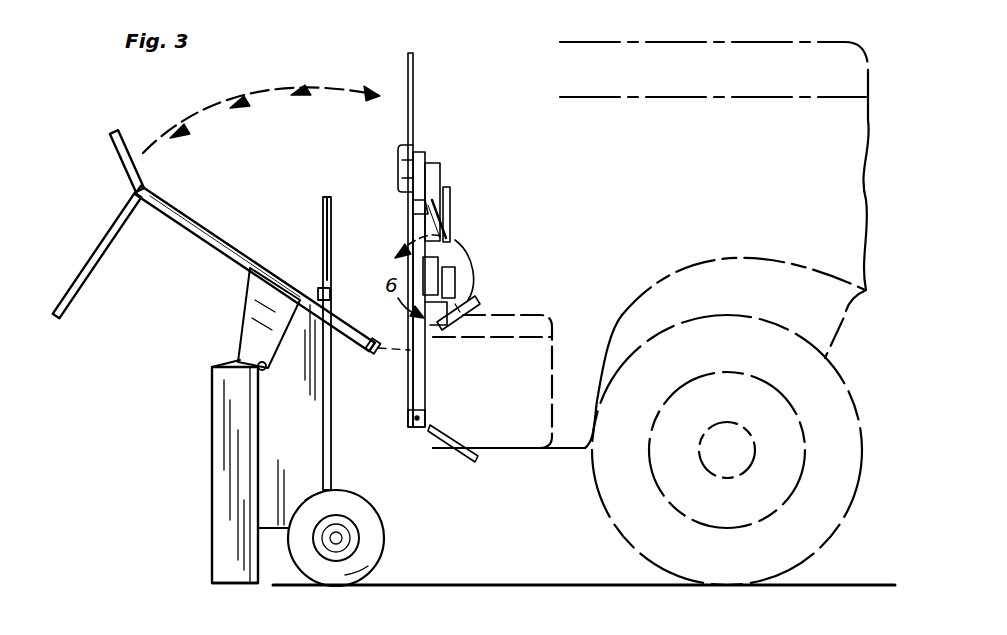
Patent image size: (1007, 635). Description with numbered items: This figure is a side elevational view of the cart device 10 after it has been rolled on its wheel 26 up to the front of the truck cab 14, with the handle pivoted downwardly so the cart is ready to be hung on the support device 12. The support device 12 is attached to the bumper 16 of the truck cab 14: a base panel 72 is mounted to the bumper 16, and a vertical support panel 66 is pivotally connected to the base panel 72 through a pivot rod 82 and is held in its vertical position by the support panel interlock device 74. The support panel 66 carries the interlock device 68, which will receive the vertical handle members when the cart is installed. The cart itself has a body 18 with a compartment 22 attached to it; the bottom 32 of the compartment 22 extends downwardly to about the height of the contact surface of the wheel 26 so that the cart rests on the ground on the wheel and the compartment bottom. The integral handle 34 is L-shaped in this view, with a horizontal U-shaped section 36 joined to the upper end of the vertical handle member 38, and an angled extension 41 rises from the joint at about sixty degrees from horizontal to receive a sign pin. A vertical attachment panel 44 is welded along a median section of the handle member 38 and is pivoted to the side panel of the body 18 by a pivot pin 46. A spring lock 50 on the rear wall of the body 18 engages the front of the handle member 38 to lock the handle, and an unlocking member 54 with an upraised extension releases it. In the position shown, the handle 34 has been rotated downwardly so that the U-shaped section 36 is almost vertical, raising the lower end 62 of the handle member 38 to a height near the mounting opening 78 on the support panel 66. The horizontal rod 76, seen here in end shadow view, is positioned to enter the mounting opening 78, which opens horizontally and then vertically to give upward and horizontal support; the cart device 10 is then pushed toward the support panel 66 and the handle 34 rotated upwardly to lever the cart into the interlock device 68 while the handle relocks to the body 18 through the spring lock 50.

The cart device 10 is at (170, 456).
The support device 12 is at (468, 190).
The truck cab 14 is at (565, 70).
The bumper 16 is at (505, 450).
The body 18 is at (325, 450).
The compartment 22 is at (230, 507).
The wheel 26 is at (372, 545).
The bottom of compartment 32 is at (228, 584).
The integral handle 34 is at (150, 190).
The horizontal U shaped section 36 is at (78, 285).
The vertical handle member 38 is at (216, 232).
The angled extension 41 is at (118, 150).
The vertical attachment panel 44 is at (250, 304).
The pivot pin 46 is at (262, 372).
The spring lock 50 is at (326, 290).
The unlocking member 54 is at (322, 226).
The lower end of vertical handle member 62 is at (372, 356).
The support panel 66 is at (422, 214).
The interlock device 68 is at (392, 160).
The base panel 72 is at (442, 328).
The support panel interlock device 74 is at (475, 262).
The horizontal rod 76 is at (377, 340).
The mounting opening 78 is at (409, 362).
The pivot rod 82 is at (428, 432).